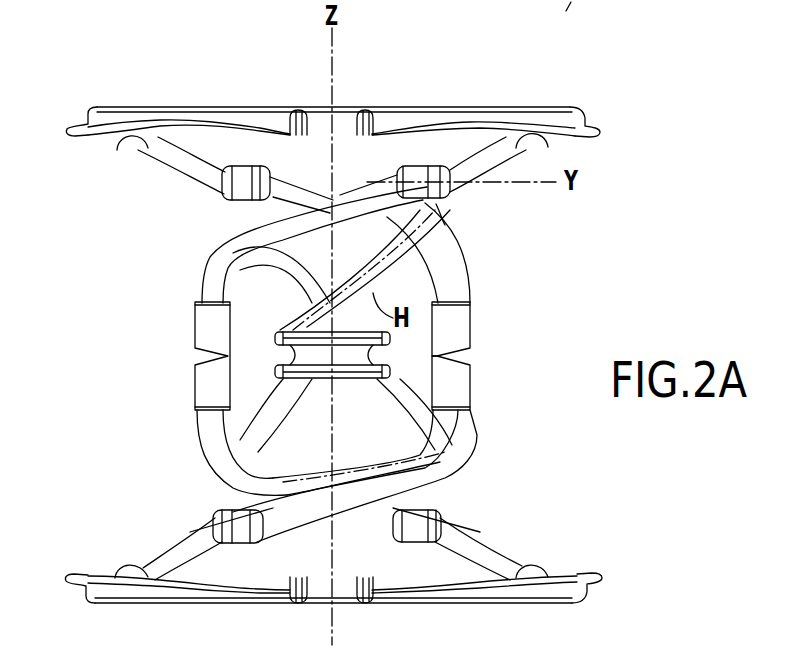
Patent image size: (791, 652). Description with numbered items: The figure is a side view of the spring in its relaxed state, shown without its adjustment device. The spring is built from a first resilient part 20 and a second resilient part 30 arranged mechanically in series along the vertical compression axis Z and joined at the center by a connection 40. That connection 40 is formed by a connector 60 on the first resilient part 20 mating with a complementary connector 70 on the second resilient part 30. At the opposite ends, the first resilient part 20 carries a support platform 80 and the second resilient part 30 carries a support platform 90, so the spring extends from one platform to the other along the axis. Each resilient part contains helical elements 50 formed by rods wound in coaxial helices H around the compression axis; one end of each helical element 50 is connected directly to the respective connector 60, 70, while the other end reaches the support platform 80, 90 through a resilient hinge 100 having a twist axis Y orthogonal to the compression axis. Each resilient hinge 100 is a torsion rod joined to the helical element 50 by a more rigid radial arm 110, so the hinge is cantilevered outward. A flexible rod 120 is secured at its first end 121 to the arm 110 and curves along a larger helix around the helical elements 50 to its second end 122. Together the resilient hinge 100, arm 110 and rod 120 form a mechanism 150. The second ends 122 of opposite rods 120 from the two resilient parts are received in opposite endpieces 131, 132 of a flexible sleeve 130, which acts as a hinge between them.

The first resilient part 20 is at (364, 119).
The second resilient part 30 is at (363, 591).
The connection 40 is at (246, 328).
The helical element 50 is at (297, 288).
The connector 60 is at (275, 338).
The connector 70 is at (275, 373).
The support platform 80 is at (542, 124).
The support platform 90 is at (500, 603).
The resilient hinge 100 is at (452, 158).
The arm 110 is at (227, 203).
The rod 120 is at (197, 258).
The first end 121 is at (437, 204).
The second end 122 is at (203, 290).
The flexible sleeve 130 is at (502, 353).
The endpiece 131 is at (470, 320).
The endpiece 132 is at (470, 382).
The mechanism 150 is at (300, 317).